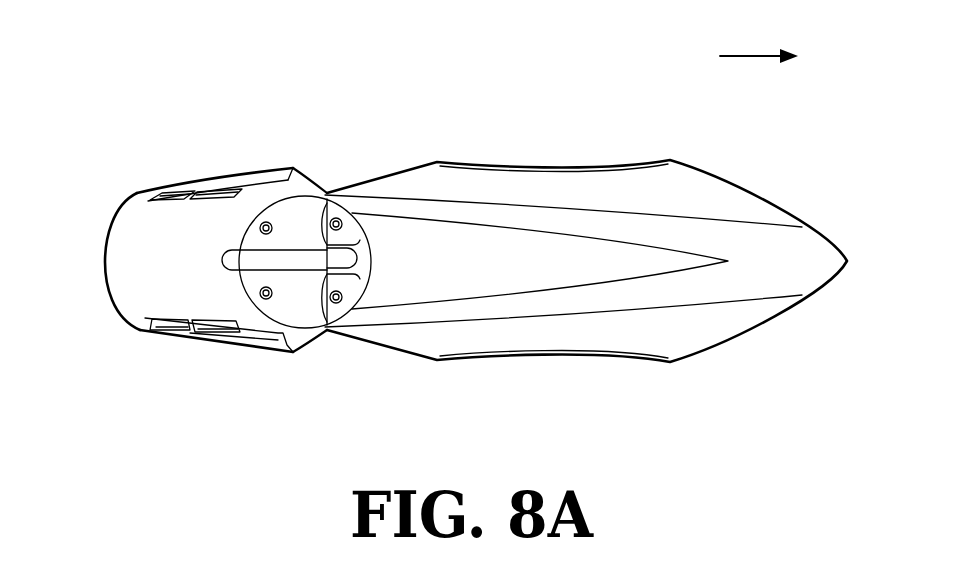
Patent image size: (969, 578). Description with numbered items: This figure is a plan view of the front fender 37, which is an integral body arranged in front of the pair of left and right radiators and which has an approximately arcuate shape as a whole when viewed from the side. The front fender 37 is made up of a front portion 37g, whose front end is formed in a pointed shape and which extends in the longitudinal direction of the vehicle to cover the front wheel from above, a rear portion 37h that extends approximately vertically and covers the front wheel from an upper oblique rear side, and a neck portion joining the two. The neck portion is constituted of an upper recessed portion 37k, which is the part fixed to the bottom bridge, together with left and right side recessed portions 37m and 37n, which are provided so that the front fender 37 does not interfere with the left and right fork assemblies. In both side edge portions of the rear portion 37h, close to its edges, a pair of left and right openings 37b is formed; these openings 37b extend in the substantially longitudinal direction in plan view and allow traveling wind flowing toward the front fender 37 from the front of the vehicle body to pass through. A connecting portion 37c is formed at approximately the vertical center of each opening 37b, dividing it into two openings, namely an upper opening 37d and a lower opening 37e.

The front fender 37 is at (217, 93).
The opening 37b is at (162, 188).
The connecting portion 37c is at (184, 198).
The upper opening 37d is at (224, 190).
The lower opening 37e is at (182, 194).
The front portion 37g is at (555, 180).
The rear portion 37h is at (123, 263).
The upper recessed portion 37k is at (295, 305).
The side recessed portion 37m is at (310, 180).
The side recessed portion 37n is at (316, 338).